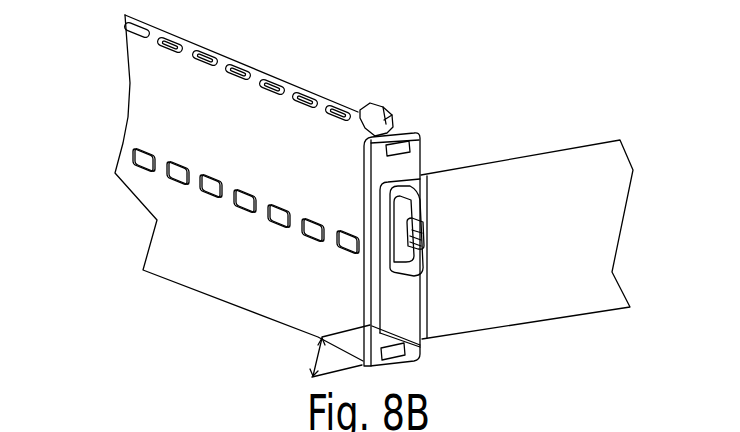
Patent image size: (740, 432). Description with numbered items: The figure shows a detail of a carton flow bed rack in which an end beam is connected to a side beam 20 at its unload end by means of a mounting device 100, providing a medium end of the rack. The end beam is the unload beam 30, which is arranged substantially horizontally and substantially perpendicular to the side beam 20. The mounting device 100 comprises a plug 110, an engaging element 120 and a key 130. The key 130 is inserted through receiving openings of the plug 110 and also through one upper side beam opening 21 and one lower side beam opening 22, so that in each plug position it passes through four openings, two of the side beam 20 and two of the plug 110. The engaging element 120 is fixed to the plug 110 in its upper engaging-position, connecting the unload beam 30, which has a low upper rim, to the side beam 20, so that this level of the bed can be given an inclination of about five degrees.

The side beam 20 is at (160, 260).
The upper side beam opening 21 is at (204, 58).
The lower side beam opening 22 is at (324, 351).
The unload beam 30 is at (587, 133).
The mounting device 100 is at (420, 137).
The plug 110 is at (421, 166).
The engaging element 120 is at (400, 268).
The key 130 is at (378, 113).